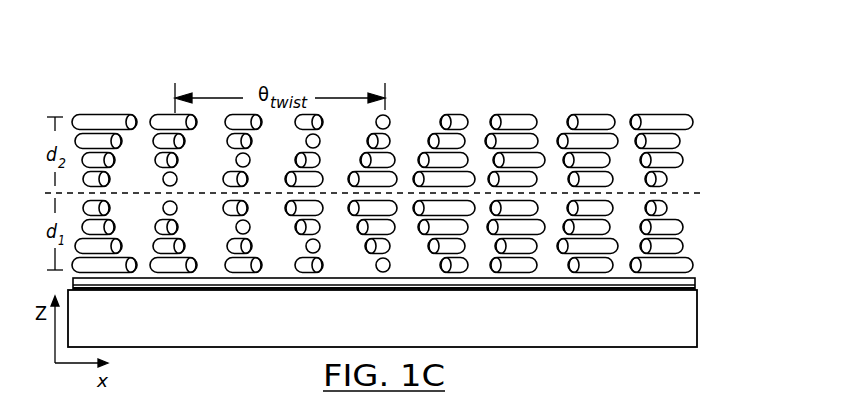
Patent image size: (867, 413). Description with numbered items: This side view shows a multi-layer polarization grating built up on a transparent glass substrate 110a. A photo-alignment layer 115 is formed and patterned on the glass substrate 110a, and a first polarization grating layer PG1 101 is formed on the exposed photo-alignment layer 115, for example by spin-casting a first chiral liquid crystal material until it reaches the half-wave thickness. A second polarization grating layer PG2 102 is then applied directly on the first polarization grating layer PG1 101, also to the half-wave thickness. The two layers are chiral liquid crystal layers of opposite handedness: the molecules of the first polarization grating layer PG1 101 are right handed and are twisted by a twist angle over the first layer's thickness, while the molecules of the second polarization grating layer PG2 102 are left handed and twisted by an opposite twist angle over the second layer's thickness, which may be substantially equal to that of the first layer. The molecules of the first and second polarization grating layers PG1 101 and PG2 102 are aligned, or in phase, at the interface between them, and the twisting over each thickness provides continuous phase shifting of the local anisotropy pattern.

The second polarization grating layer PG2 102 is at (707, 112).
The first polarization grating layer PG1 101 is at (707, 197).
The photo-alignment layer 115 is at (696, 283).
The glass substrate 110a is at (412, 338).